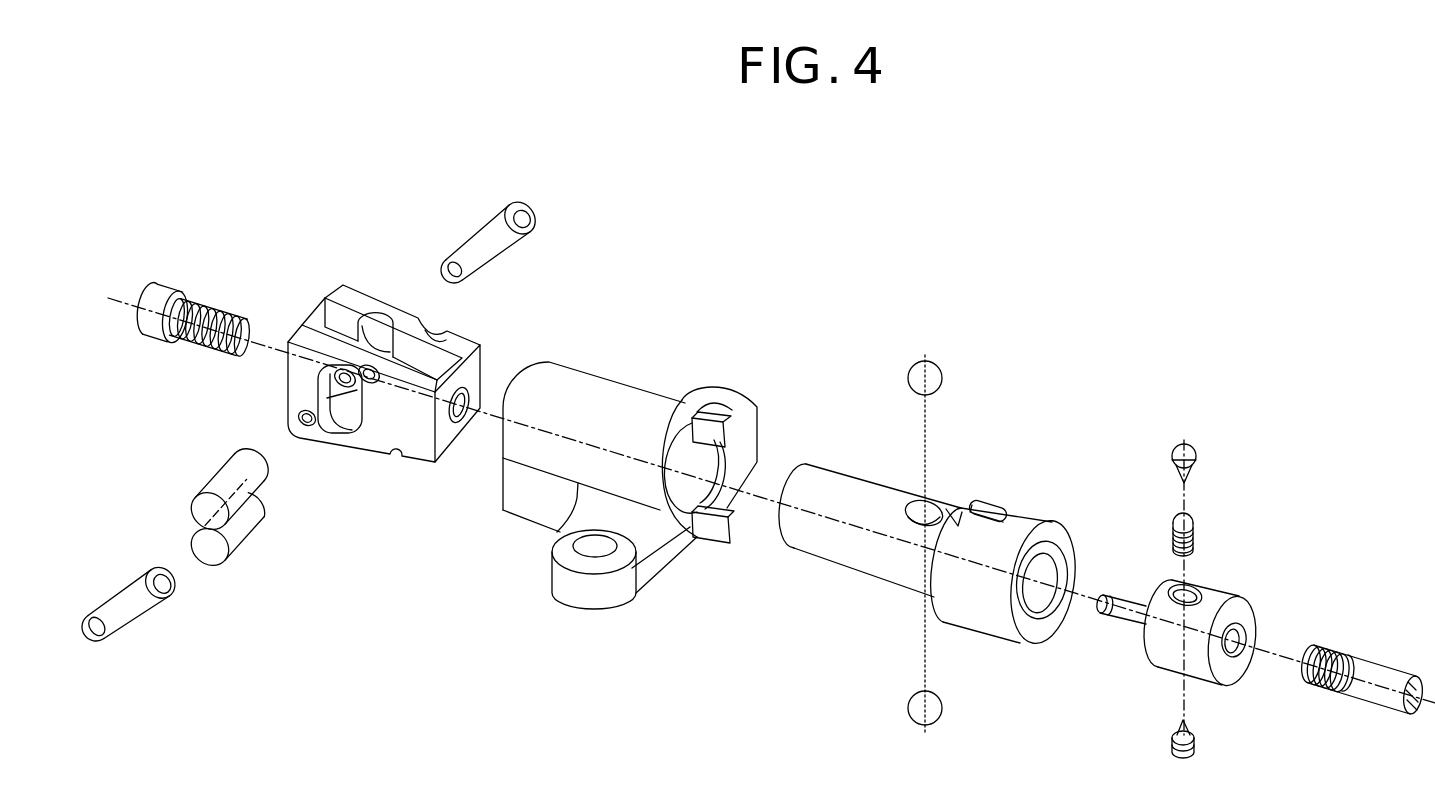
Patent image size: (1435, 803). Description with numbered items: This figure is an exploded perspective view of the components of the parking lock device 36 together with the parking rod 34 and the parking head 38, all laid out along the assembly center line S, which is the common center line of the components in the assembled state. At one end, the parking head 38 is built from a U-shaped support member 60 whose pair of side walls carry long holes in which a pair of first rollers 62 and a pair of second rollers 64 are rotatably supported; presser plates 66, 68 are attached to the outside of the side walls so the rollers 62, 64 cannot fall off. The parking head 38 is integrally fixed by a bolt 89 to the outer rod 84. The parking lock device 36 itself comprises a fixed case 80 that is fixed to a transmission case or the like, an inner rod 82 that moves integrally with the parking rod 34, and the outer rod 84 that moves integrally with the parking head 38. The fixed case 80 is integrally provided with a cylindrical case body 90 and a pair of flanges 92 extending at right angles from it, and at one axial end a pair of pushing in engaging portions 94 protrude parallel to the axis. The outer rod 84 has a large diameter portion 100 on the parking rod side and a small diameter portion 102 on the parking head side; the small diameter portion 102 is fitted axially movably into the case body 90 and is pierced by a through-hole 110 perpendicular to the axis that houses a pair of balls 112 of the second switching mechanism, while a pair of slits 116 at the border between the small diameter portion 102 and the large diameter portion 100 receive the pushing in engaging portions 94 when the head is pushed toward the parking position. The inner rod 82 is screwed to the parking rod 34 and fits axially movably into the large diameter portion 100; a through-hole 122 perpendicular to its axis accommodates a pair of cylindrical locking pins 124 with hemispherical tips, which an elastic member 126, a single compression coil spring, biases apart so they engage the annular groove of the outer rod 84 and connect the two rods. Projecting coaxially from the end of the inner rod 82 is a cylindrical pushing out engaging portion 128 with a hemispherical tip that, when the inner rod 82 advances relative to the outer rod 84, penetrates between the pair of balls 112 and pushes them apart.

The assembly center line S is at (763, 494).
The parking rod 34 is at (1362, 692).
The parking lock device 36 is at (1180, 544).
The parking head 38 is at (377, 332).
The support member 60 is at (370, 448).
The first roller 62 is at (248, 527).
The second roller 64 is at (228, 473).
The presser plate 66 is at (122, 600).
The presser plate 68 is at (483, 244).
The fixed case 80 is at (652, 471).
The inner rod 82 is at (1212, 603).
The outer rod 84 is at (931, 533).
The bolt 89 is at (163, 300).
The case body 90 is at (601, 392).
The flange 92 is at (744, 418).
The pushing in engaging portion 94 is at (716, 416).
The large diameter portion 100 is at (984, 615).
The small diameter portion 102 is at (851, 555).
The through-hole 110 is at (917, 510).
The ball 112 is at (918, 378).
The slit 116 is at (988, 502).
The through-hole 122 is at (1177, 583).
The locking pin 124 is at (1173, 463).
The elastic member 126 is at (1195, 540).
The pushing out engaging portion 128 is at (1116, 615).